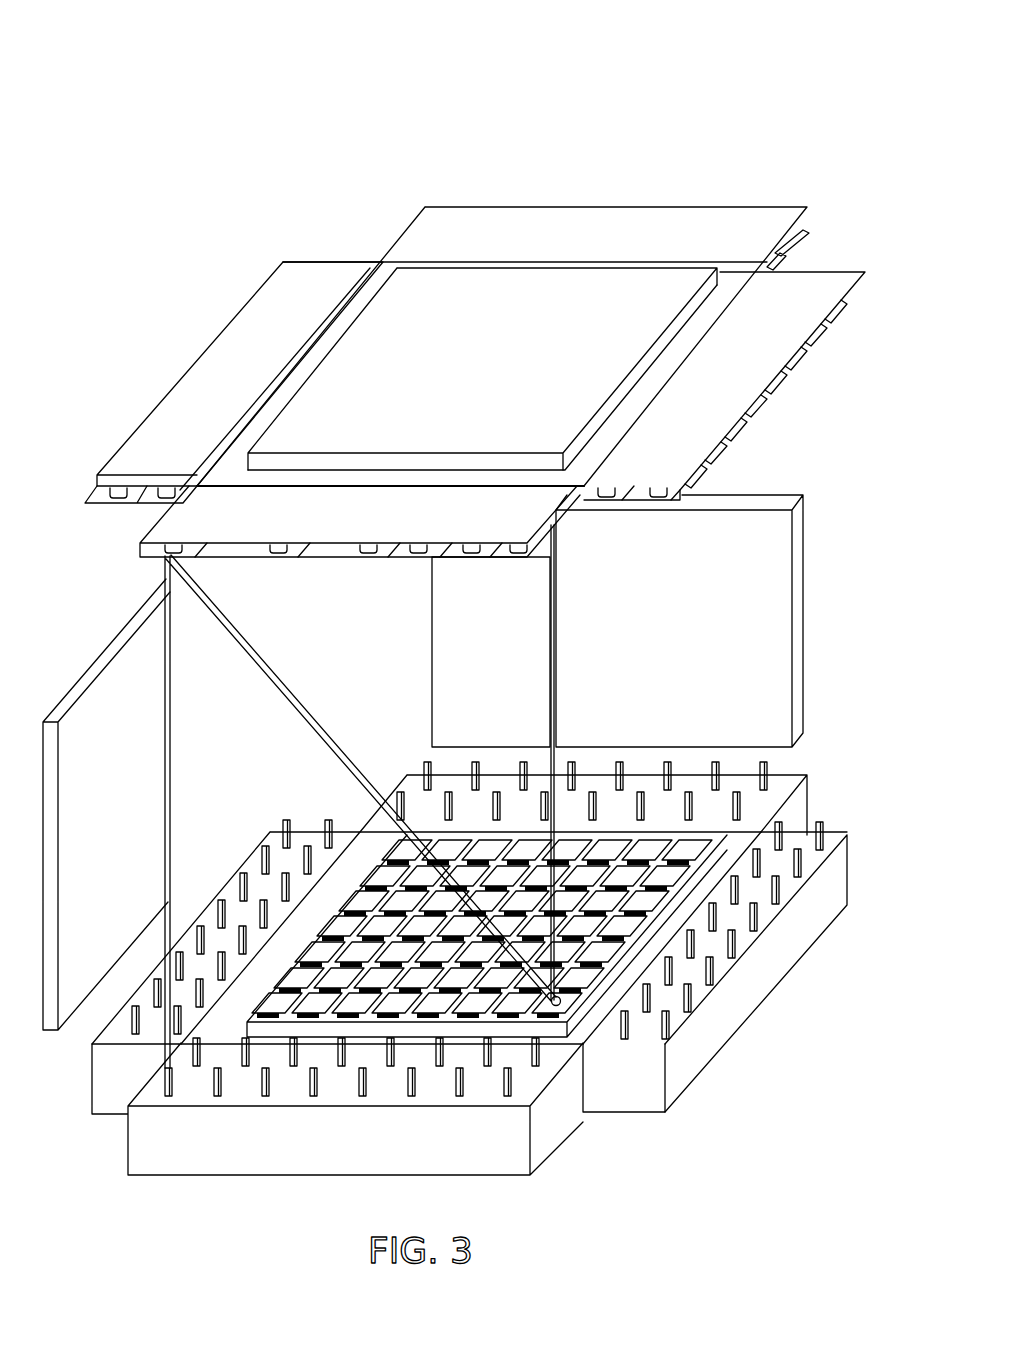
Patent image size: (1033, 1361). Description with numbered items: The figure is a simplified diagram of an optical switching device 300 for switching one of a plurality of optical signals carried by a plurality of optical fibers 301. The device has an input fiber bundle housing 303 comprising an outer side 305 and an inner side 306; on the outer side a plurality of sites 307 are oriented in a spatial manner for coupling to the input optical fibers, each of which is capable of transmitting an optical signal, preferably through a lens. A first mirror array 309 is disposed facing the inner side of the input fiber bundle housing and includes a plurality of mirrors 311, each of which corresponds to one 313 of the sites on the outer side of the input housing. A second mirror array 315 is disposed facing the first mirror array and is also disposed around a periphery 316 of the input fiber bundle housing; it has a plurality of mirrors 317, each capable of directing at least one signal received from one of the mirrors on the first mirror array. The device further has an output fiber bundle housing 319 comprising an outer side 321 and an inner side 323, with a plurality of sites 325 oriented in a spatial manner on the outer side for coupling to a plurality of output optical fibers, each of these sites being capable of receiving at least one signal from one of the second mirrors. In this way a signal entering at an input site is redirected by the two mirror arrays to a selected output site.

The optical switching device 300 is at (747, 72).
The optical fibers 301 is at (597, 287).
The input fiber bundle housing 303 is at (473, 320).
The outer side 305 is at (388, 328).
The inner side 306 is at (637, 383).
The sites 307 is at (553, 486).
The first mirror array 309 is at (558, 1048).
The mirrors 311 is at (710, 830).
The one of the sites 313 is at (557, 667).
The second mirror array 315 is at (714, 228).
The periphery 316 is at (475, 452).
The mirrors 317 is at (506, 558).
The output fiber bundle housing 319 is at (673, 1105).
The outer side 321 is at (735, 1030).
The inner side 323 is at (718, 958).
The sites 325 is at (778, 905).